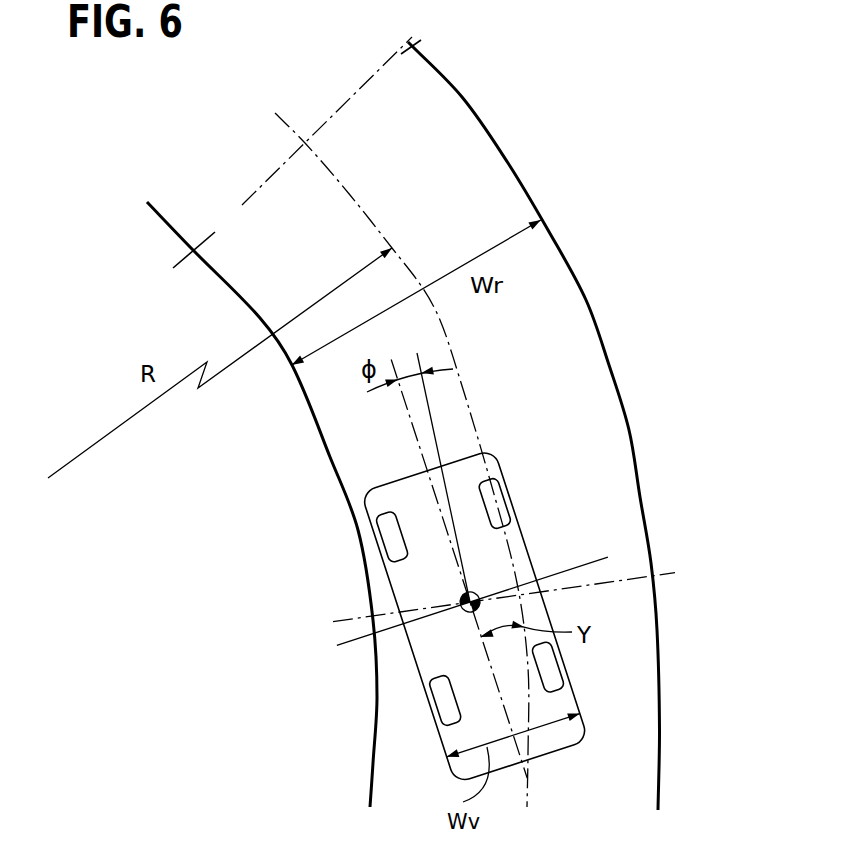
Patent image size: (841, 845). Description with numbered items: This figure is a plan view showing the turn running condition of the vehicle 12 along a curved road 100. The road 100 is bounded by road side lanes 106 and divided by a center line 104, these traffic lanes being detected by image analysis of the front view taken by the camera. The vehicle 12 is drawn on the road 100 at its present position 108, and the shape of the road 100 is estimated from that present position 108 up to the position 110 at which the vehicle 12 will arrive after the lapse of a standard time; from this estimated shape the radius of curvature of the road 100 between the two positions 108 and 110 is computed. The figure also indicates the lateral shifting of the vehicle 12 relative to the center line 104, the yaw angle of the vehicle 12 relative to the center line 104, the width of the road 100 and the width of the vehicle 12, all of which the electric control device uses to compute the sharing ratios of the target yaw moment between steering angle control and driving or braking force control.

The vehicle 12 is at (386, 578).
The road 100 is at (422, 423).
The center line 104 is at (362, 203).
The road side lanes 106 is at (335, 457).
The present position 108 is at (667, 568).
The position 110 is at (208, 240).